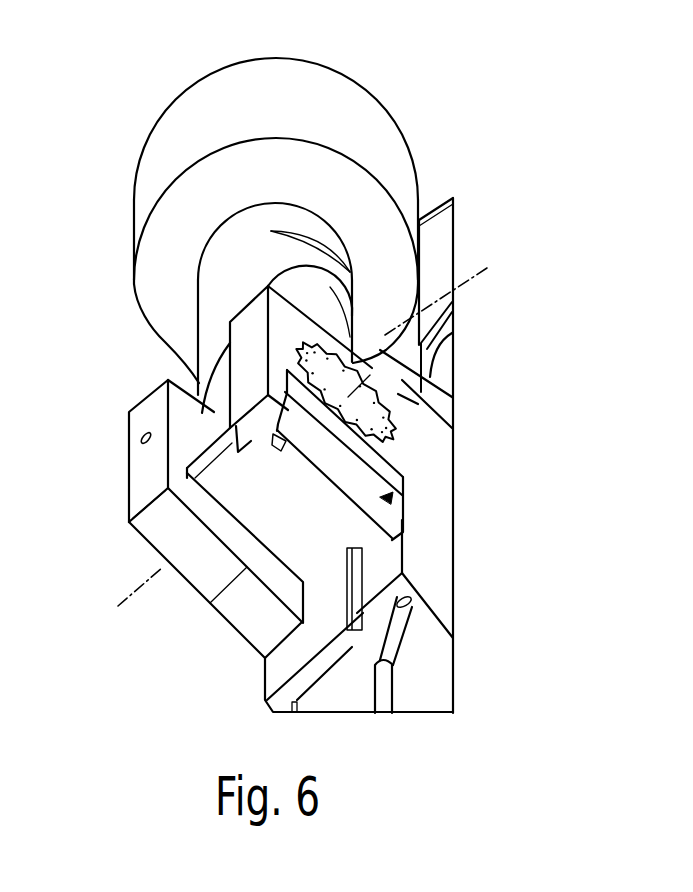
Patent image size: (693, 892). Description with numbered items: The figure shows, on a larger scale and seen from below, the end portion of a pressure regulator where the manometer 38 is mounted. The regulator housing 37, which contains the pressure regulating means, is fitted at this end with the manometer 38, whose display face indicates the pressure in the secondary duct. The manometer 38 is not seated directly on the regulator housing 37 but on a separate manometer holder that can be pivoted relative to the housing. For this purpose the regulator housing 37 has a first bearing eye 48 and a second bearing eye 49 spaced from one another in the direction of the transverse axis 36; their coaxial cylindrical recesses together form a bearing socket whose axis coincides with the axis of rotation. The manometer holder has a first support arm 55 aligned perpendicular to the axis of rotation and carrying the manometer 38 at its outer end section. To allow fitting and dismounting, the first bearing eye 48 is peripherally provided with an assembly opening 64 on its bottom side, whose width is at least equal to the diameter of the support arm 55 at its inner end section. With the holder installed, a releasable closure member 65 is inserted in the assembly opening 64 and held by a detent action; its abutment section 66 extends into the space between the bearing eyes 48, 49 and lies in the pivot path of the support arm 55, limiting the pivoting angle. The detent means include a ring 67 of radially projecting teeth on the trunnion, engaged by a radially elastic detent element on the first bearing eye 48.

The transverse axis 36 is at (477, 277).
The regulator housing 37 is at (438, 570).
The manometer 38 is at (375, 122).
The first bearing eye 48 is at (243, 332).
The second bearing eye 49 is at (145, 413).
The first support arm 55 is at (218, 273).
The assembly opening 64 is at (268, 450).
The releasable closure member 65 is at (398, 503).
The abutment section 66 is at (260, 522).
The ring of teeth 67 is at (423, 394).